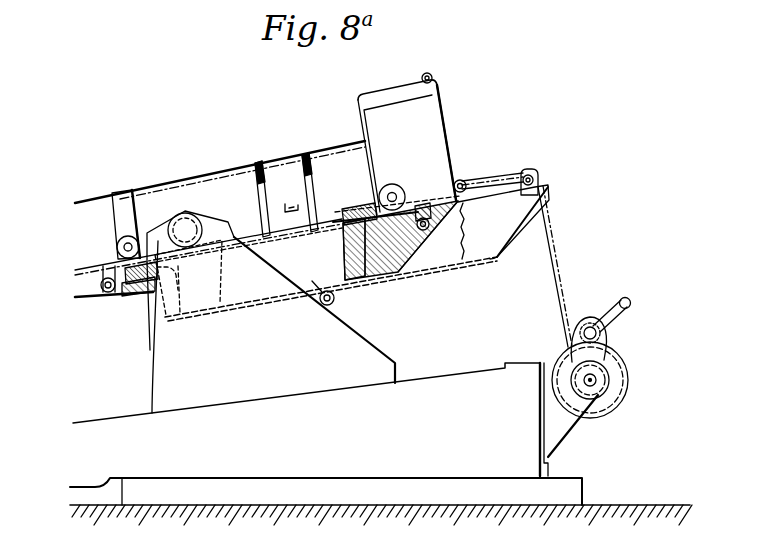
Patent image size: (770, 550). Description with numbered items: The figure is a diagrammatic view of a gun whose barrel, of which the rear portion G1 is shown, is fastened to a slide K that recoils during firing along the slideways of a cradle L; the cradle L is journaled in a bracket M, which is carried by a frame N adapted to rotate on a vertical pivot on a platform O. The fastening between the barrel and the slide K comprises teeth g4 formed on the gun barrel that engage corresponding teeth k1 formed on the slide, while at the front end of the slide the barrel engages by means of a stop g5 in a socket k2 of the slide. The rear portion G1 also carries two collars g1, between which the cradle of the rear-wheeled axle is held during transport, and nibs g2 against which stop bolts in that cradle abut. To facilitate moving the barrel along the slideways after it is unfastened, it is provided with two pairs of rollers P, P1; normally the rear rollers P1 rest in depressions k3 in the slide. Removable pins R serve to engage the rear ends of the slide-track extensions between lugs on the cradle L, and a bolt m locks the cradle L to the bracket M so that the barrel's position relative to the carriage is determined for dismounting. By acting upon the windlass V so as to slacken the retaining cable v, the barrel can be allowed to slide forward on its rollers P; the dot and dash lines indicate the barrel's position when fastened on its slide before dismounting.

The rear portion of the gun barrel G1 is at (220, 185).
The collars g1 is at (263, 177).
The nibs g2 is at (294, 210).
The teeth g4 is at (373, 208).
The stop g5 is at (127, 295).
The rollers P is at (121, 238).
The rear rollers P1 is at (403, 212).
The removable pins R is at (108, 294).
The slide K is at (398, 270).
The teeth k1 is at (372, 263).
The socket k2 is at (152, 275).
The depressions k3 is at (418, 255).
The cradle L is at (493, 243).
The bolt m is at (334, 304).
The bracket M is at (363, 363).
The frame N is at (470, 393).
The platform O is at (568, 485).
The retaining cable v is at (502, 176).
The windlass V is at (556, 262).